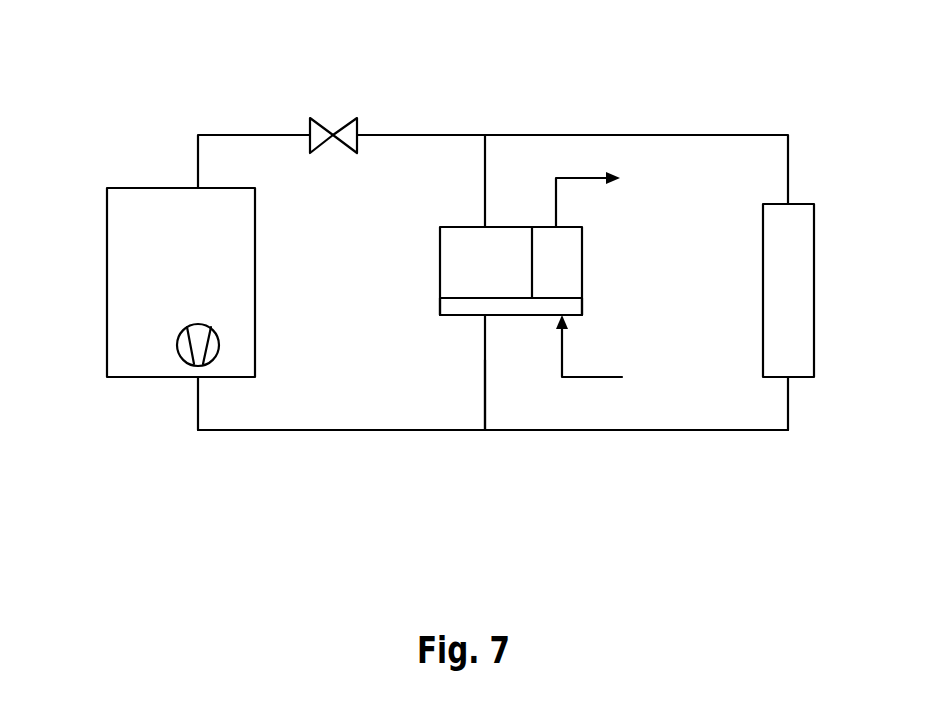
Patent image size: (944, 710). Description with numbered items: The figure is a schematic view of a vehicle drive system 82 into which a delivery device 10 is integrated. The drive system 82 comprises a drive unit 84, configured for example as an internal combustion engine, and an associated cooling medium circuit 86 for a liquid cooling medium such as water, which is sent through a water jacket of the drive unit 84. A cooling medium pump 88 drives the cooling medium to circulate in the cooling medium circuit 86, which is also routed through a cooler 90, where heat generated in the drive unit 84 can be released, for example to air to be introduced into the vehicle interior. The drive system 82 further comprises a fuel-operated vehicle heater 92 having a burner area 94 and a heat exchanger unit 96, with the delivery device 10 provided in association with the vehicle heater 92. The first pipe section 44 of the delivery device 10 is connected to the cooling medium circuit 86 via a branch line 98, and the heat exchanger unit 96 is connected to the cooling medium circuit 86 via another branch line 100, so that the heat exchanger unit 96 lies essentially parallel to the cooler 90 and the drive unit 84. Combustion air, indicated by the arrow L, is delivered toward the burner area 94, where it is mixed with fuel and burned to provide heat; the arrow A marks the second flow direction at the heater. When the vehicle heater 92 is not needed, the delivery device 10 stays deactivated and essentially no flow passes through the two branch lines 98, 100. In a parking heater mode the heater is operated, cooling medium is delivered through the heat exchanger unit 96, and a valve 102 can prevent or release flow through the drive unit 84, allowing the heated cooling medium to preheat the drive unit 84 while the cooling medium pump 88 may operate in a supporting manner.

The drive system 82 is at (712, 92).
The drive unit 84 is at (107, 215).
The cooling medium circuit 86 is at (332, 432).
The cooling medium pump 88 is at (178, 360).
The cooler 90 is at (815, 235).
The vehicle heater 92 is at (533, 188).
The burner area 94 is at (558, 260).
The heat exchanger unit 96 is at (462, 264).
The branch line 98 is at (483, 398).
The branch line 100 is at (486, 158).
The valve 102 is at (333, 124).
The first pipe section 44 is at (482, 323).
The delivery device 10 is at (525, 318).
The air flow A is at (569, 180).
The combustion air L is at (573, 374).